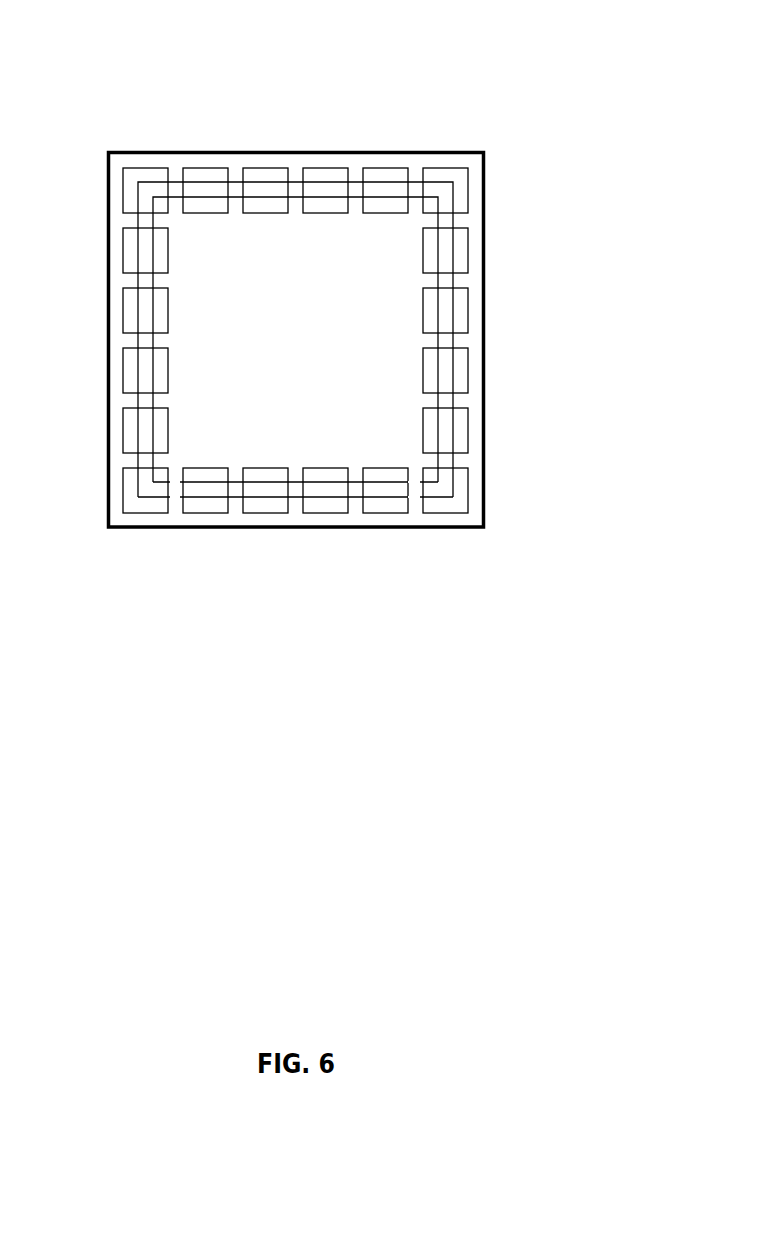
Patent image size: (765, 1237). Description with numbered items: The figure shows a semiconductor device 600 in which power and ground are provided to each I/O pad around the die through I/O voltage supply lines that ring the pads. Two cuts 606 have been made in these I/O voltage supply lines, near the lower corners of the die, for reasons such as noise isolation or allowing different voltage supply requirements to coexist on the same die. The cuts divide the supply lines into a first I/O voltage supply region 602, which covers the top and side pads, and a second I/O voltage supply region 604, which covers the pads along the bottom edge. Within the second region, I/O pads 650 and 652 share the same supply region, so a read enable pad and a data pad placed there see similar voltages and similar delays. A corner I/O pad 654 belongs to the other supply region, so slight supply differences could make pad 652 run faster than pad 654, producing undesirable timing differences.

The integrated circuit die 600 is at (109, 339).
The first I/O voltage supply region 602 is at (470, 338).
The second I/O voltage supply region 604 is at (408, 441).
The cuts in I/O voltage supply lines 606 is at (177, 546).
The I/O pad 650 is at (325, 513).
The I/O pad 652 is at (387, 513).
The I/O pad 654 is at (445, 513).